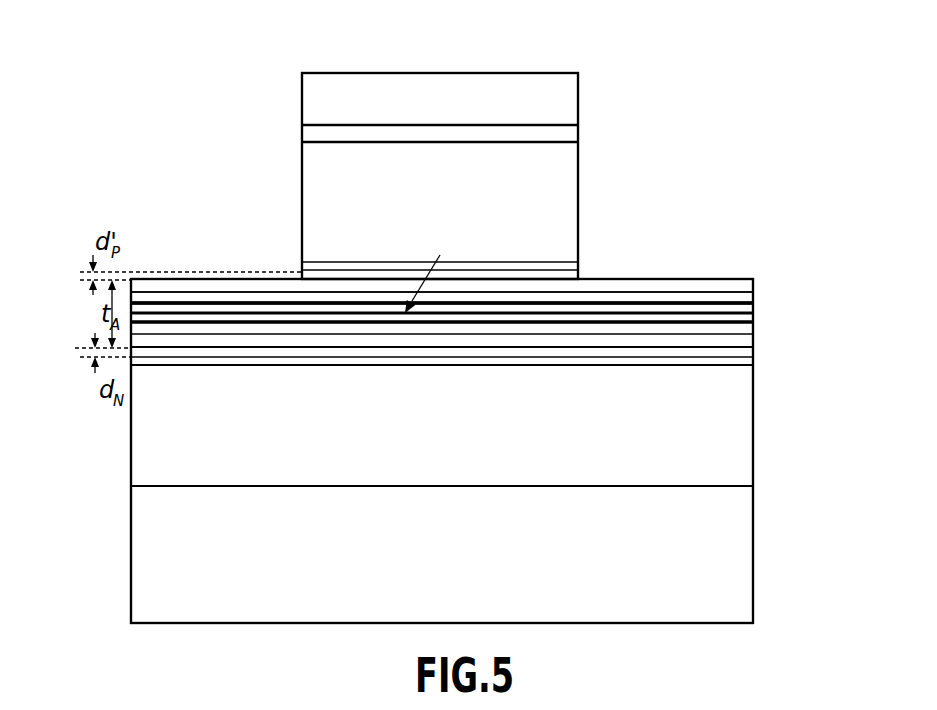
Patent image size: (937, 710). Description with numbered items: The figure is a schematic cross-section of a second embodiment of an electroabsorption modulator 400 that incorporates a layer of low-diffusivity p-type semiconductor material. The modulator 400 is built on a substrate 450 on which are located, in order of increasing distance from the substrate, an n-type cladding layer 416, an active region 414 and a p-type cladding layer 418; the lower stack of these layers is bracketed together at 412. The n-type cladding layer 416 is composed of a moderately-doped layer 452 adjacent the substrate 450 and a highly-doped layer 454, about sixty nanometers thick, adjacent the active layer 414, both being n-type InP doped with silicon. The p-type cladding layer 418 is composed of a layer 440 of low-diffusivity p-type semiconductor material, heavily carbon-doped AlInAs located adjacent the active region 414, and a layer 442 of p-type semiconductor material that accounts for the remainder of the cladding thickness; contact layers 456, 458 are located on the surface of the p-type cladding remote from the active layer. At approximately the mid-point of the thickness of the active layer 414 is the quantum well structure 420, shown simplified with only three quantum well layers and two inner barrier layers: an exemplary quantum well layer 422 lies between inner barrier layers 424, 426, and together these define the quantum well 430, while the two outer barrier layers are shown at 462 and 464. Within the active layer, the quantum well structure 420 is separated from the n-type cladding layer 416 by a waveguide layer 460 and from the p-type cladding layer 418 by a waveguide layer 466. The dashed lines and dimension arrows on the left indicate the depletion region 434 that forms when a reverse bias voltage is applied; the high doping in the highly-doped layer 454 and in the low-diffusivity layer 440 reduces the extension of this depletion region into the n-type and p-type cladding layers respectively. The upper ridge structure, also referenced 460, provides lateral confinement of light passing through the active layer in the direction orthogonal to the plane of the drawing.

The electroabsorption modulator 400 is at (566, 65).
The lower layer stack 412 is at (849, 142).
The active region 414 is at (802, 280).
The n-type cladding layer 416 is at (802, 348).
The p-type cladding layer 418 is at (759, 142).
The quantum well structure 420 is at (756, 292).
The quantum well layer 422 is at (355, 313).
The inner barrier layer 424 is at (390, 318).
The inner barrier layer 426 is at (377, 310).
The quantum well 430 is at (429, 270).
The depletion region 434 is at (79, 272).
The layer of low-diffusivity p-type semiconductor material 440 is at (582, 279).
The layer of p-type semiconductor material 442 is at (582, 142).
The substrate 450 is at (735, 550).
The moderately-doped layer 452 is at (756, 367).
The highly-doped layer 454 is at (756, 348).
The contact layer 456 is at (582, 125).
The contact layer 458 is at (582, 73).
The waveguide layer 460 is at (473, 340).
The outer barrier layer 462 is at (438, 330).
The outer barrier layer 464 is at (488, 297).
The waveguide layer 466 is at (535, 284).